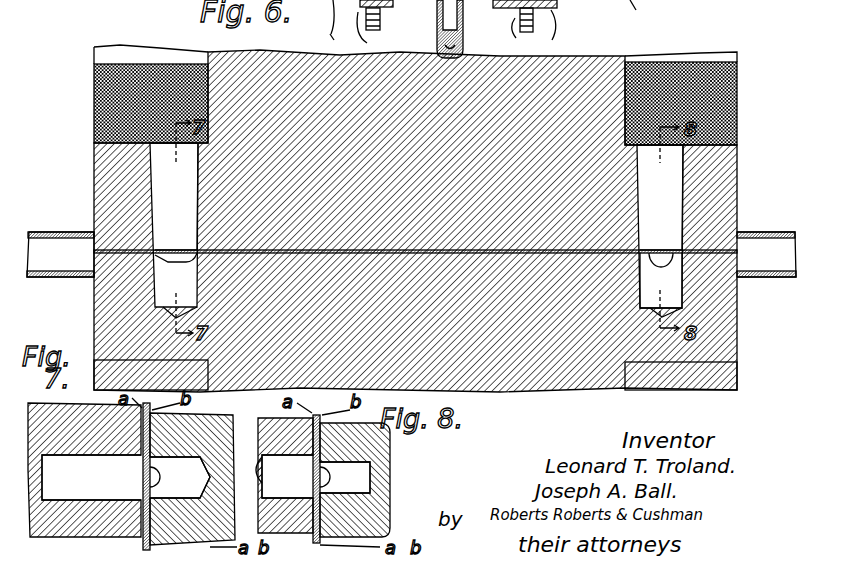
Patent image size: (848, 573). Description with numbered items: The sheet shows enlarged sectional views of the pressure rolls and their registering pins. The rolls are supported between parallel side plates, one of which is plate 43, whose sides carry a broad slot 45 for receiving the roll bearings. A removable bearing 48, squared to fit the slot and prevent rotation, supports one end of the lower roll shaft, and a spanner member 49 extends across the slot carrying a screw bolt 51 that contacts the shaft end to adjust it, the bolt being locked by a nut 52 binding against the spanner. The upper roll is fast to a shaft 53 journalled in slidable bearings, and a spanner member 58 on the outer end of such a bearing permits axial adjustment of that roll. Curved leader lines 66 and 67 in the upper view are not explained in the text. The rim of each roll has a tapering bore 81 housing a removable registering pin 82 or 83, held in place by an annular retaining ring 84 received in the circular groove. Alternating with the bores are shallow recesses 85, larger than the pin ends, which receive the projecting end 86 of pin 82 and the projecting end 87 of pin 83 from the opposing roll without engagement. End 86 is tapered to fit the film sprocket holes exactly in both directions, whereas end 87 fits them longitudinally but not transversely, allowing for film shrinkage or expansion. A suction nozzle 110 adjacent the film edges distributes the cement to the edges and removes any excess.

In FIG. 6, the plate 43 is at (645, 15).
In FIG. 6, the broad slot 45 is at (463, 8).
In FIG. 6, the removable bearing 48 is at (583, 0).
In FIG. 6, the spanner member 49 is at (579, 31).
In FIG. 6, the screw bolt 51 is at (534, 26).
In FIG. 6, the nut 52 is at (527, 37).
In FIG. 6, the shaft 53 is at (393, 4).
In FIG. 6, the spanner member 58 is at (372, 33).
In FIG. 6, the lever 66 is at (312, 17).
In FIG. 6, the link 67 is at (336, 41).
In FIG. 7, the tapering bore 81 is at (683, 185).
In FIG. 7, the registering pin 82 is at (170, 200).
In FIG. 8, the registering pin 82 is at (91, 477).
In FIG. 7, the registering pin 83 is at (700, 222).
In FIG. 8, the registering pin 83 is at (287, 476).
In FIG. 7, the annular retaining ring 84 is at (727, 92).
In FIG. 7, the shallow recess 85 is at (670, 297).
In FIG. 8, the shallow recess 85 is at (260, 477).
In FIG. 7, the projecting end 86 is at (167, 260).
In FIG. 7, the projecting end 87 is at (672, 258).
In FIG. 6, the suction nozzle 110 is at (475, 47).
In FIG. 7, the suction nozzle 110 is at (64, 232).